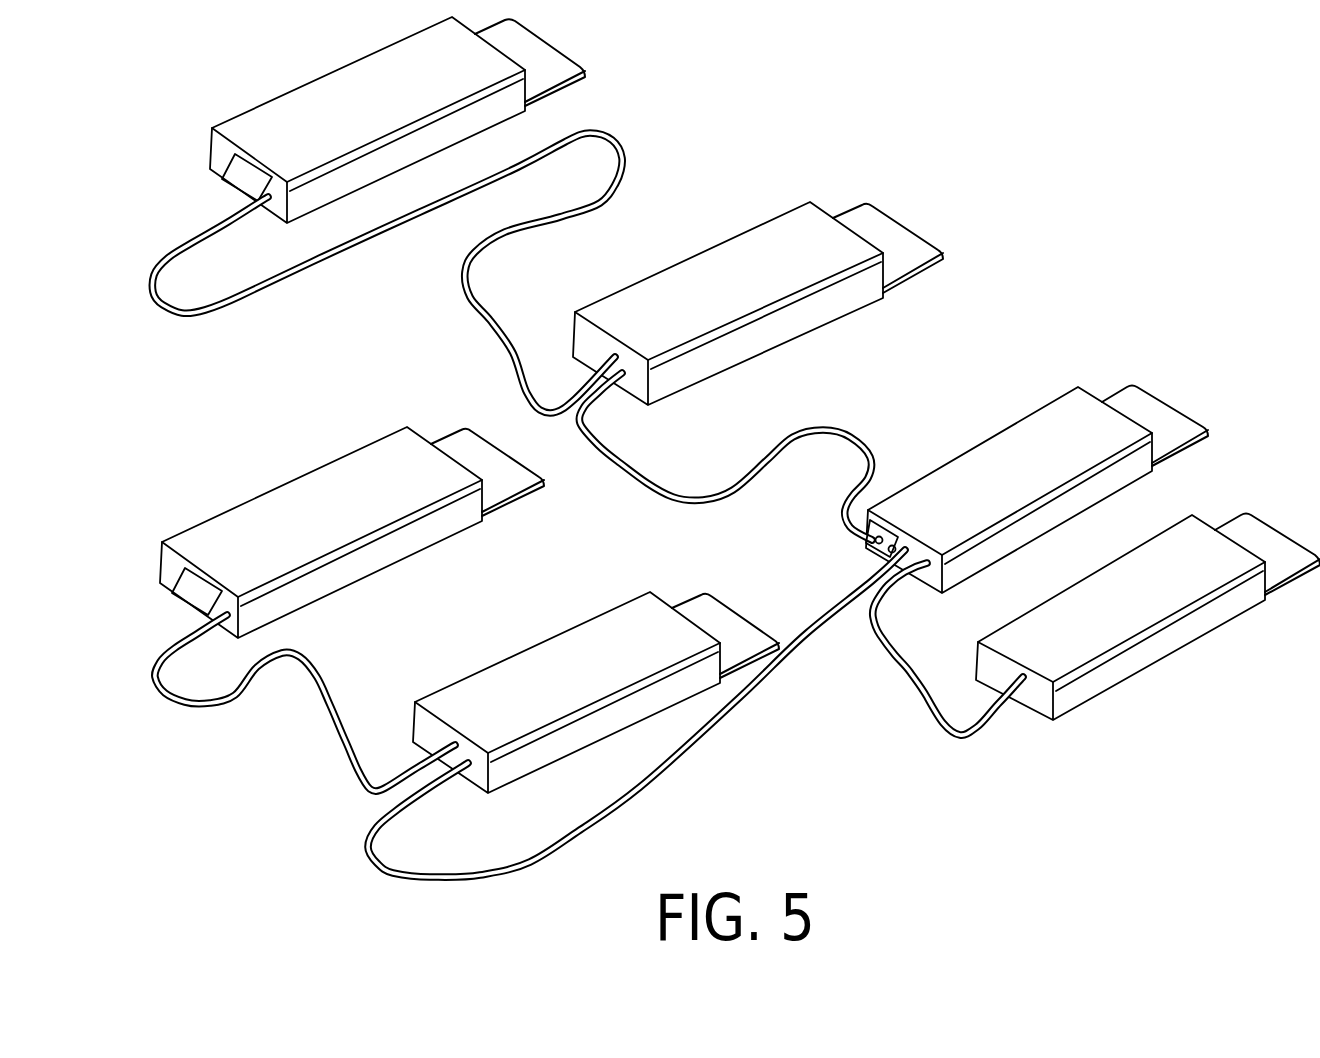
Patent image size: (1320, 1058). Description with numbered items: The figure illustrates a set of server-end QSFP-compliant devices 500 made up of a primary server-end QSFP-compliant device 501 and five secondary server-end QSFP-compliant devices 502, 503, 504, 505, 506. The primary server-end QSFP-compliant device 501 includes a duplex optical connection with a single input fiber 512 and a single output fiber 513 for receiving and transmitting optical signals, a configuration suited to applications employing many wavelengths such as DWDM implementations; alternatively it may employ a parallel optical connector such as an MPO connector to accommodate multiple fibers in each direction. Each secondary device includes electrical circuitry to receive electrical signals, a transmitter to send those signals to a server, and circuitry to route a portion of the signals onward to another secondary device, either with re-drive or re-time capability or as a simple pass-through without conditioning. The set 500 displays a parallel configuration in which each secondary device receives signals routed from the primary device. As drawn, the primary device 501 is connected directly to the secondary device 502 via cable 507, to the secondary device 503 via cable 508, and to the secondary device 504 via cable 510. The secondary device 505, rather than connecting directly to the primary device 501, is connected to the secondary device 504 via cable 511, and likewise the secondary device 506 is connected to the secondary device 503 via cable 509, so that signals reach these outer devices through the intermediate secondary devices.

The set of server-end QSFP-compliant devices 500 is at (1184, 235).
The primary server-end QSFP-compliant device 501 is at (1035, 479).
The secondary server-end QSFP-compliant device 502 is at (1138, 619).
The secondary server-end QSFP-compliant device 503 is at (752, 294).
The secondary server-end QSFP-compliant device 504 is at (590, 684).
The secondary server-end QSFP-compliant device 505 is at (352, 526).
The secondary server-end QSFP-compliant device 506 is at (388, 114).
The cable 507 is at (918, 677).
The cable 508 is at (640, 477).
The cable 509 is at (500, 338).
The cable 510 is at (387, 870).
The cable 511 is at (343, 748).
The single input fiber 512 is at (877, 540).
The single output fiber 513 is at (875, 555).